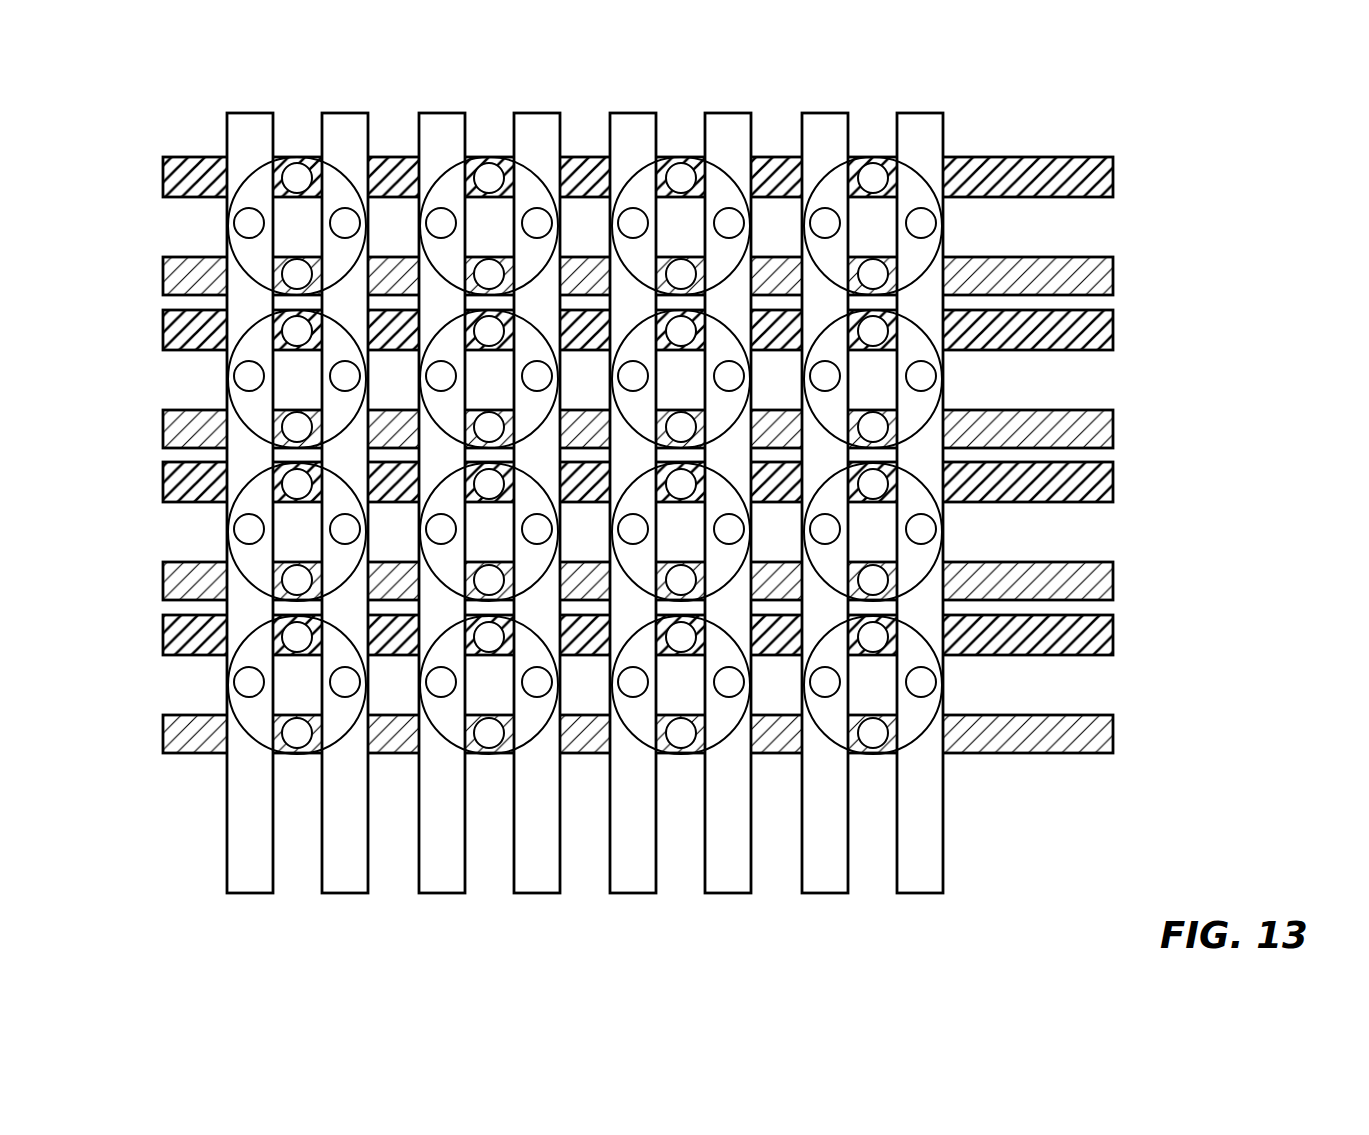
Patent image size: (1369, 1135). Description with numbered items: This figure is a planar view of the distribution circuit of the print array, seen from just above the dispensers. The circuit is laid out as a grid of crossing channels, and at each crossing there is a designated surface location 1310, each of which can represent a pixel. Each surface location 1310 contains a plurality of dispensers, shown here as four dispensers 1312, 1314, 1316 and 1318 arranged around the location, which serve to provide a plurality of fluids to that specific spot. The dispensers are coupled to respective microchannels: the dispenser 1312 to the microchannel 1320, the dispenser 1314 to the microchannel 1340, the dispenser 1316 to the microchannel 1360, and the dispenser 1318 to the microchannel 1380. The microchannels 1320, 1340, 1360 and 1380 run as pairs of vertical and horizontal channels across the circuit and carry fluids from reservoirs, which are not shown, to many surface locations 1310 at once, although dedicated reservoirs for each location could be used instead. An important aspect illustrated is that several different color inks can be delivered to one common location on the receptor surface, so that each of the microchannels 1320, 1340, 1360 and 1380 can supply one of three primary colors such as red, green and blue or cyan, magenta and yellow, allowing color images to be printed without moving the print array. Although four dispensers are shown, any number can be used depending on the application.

The surface location 1310 is at (918, 745).
The dispenser 1312 is at (921, 683).
The dispenser 1314 is at (867, 746).
The dispenser 1316 is at (813, 697).
The dispenser 1318 is at (883, 625).
The microchannel 1320 is at (933, 868).
The microchannel 1360 is at (817, 882).
The microchannel 1380 is at (1112, 638).
The microchannel 1340 is at (1103, 737).